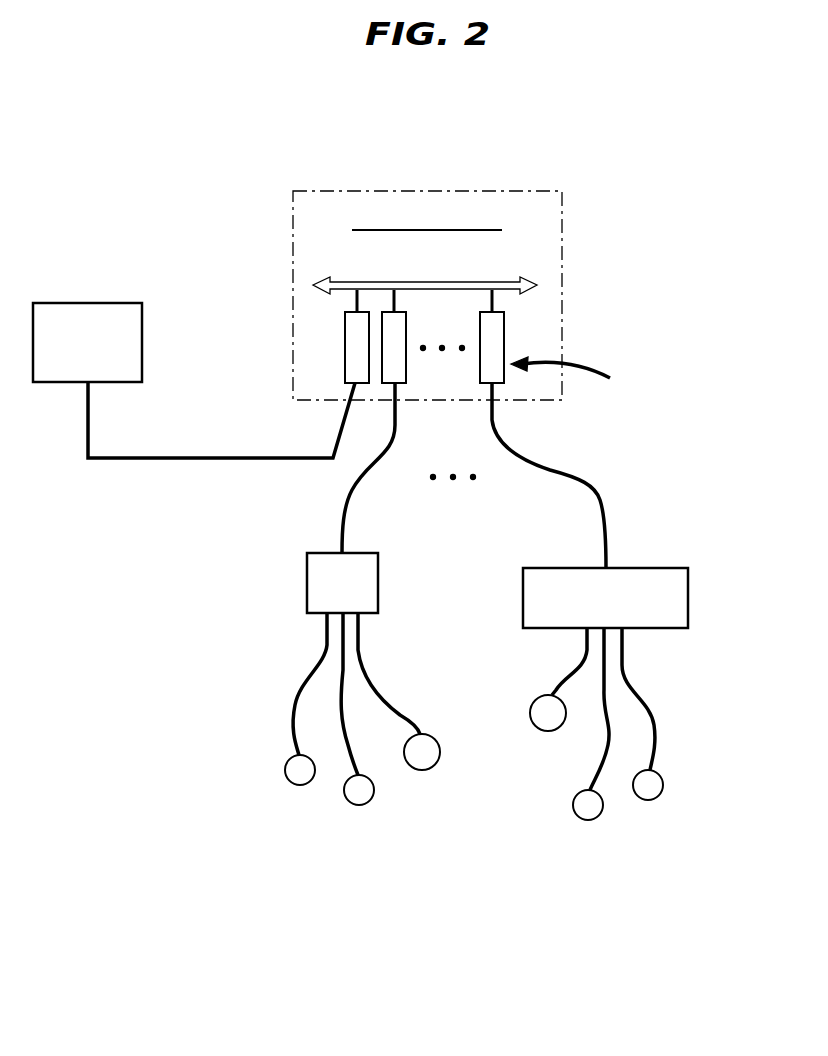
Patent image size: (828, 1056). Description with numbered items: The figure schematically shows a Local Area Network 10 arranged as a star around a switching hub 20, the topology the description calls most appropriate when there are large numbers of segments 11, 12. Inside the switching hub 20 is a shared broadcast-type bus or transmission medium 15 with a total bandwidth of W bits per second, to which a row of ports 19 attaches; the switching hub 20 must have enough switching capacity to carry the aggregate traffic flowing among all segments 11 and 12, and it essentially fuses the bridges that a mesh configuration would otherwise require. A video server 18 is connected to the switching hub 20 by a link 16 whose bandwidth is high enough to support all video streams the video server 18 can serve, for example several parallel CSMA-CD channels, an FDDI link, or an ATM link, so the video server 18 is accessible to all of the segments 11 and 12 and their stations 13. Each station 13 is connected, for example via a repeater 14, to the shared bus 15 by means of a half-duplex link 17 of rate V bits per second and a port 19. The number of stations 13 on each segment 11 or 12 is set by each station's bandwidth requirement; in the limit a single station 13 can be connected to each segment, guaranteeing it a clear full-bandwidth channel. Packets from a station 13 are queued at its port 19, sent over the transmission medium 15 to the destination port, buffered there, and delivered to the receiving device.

The Local Area Network 10 is at (148, 210).
The switching hub 20 is at (298, 190).
The shared bus 15 is at (502, 278).
The port 19 is at (505, 338).
The video server 18 is at (142, 318).
The link 16 is at (116, 460).
The segment 12 is at (365, 830).
The repeater 14 is at (523, 592).
The half-duplex link 17 is at (597, 486).
The segment 11 is at (568, 838).
The station 13 is at (663, 783).